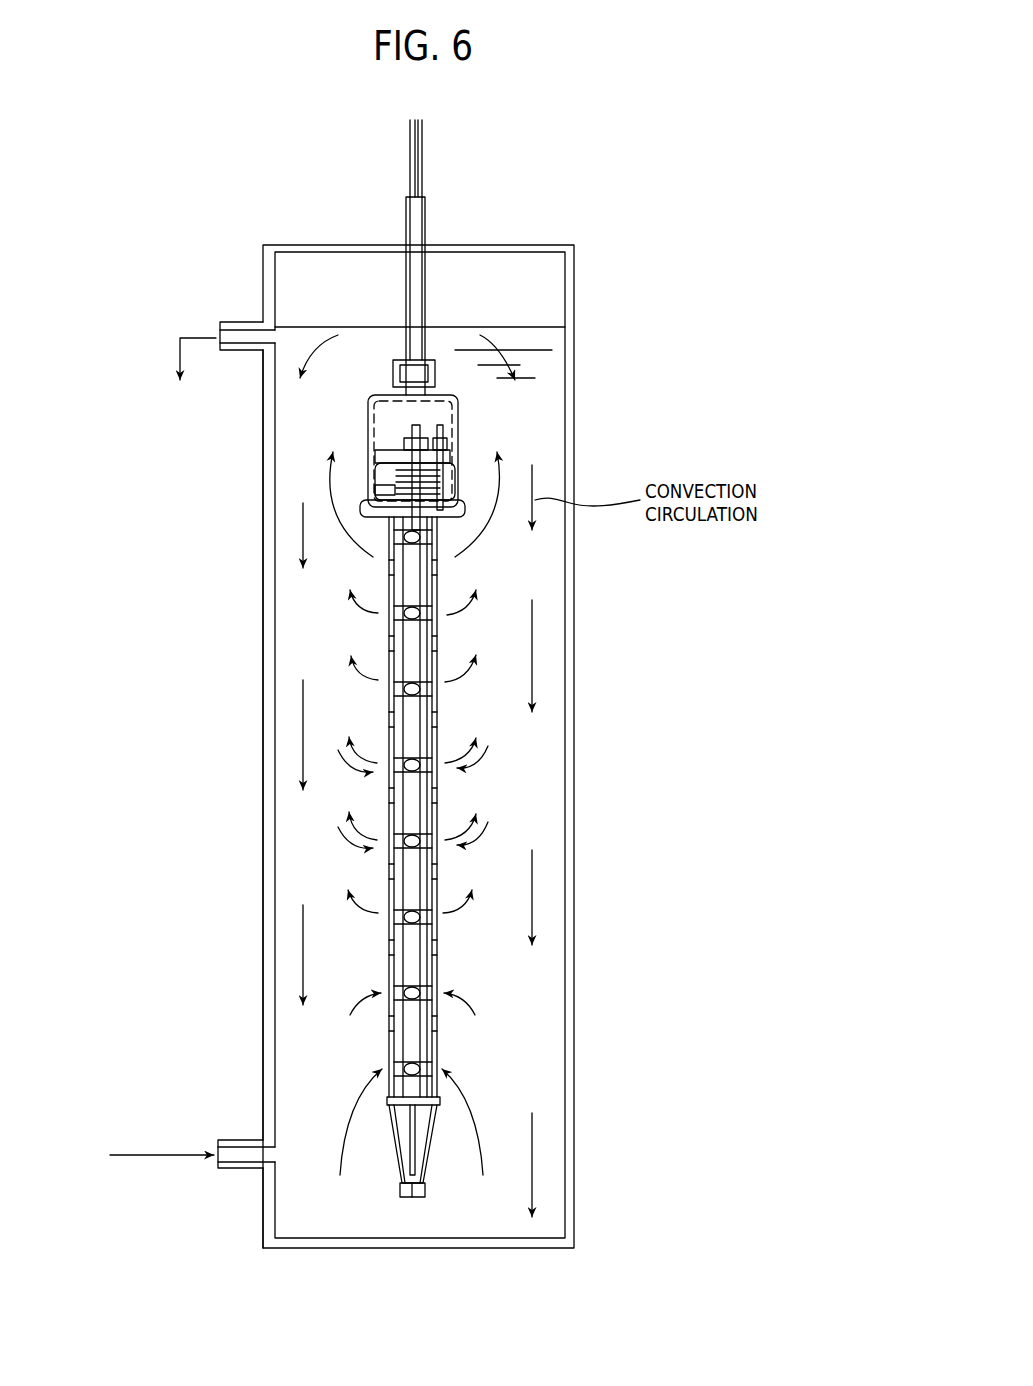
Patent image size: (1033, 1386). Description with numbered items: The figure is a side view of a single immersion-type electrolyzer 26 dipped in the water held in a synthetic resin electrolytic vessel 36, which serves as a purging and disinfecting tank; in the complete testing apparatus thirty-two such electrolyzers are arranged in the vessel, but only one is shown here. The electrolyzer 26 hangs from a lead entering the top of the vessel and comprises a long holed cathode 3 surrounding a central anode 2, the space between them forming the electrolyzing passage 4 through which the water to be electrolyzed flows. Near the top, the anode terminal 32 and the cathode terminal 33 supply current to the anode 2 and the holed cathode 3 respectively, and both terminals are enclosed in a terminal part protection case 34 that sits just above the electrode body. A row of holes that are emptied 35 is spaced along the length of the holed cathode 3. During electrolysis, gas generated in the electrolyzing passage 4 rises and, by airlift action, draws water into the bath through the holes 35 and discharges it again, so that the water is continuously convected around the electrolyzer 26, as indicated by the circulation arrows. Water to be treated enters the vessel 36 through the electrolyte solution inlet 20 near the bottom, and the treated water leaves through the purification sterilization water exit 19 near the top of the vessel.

The anode 2 is at (415, 655).
The holed cathode 3 is at (390, 636).
The electrolyzing passage 4 is at (392, 800).
The purification sterilization water exit 19 is at (220, 326).
The electrolyte solution inlet 20 is at (218, 1141).
The immersion-type electrolyzer 26 is at (385, 397).
The anode terminal 32 is at (412, 436).
The cathode terminal 33 is at (443, 430).
The terminal part protection case 34 is at (458, 399).
The hole that is emptied 35 is at (420, 762).
The electrolytic vessel 36 is at (523, 997).